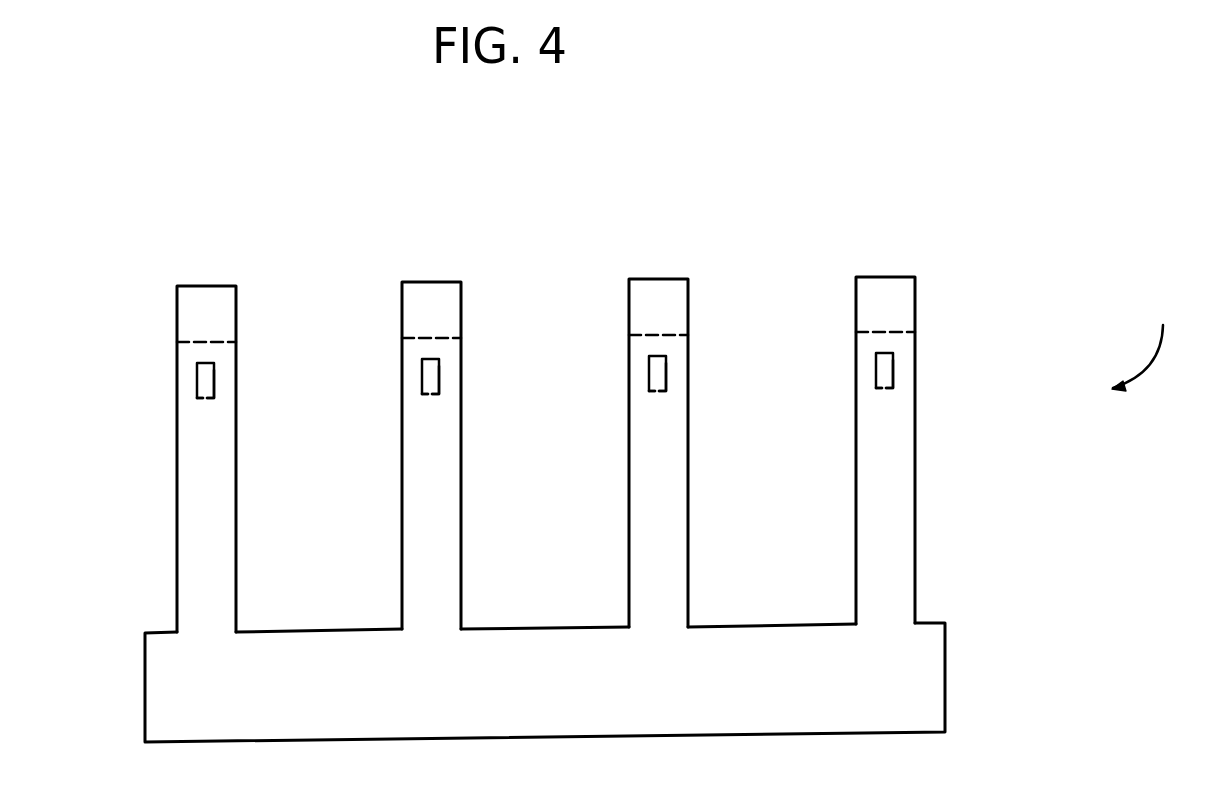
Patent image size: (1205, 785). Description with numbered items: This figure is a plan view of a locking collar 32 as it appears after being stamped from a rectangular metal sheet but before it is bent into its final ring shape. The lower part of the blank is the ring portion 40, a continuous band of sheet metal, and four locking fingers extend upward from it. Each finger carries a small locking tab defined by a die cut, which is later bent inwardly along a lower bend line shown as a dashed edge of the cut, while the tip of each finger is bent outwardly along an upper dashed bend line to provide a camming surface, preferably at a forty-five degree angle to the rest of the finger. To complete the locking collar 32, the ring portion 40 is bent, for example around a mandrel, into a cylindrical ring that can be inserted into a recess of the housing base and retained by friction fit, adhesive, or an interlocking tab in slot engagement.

The locking collar 32 is at (1144, 343).
The ring portion 40 is at (585, 682).